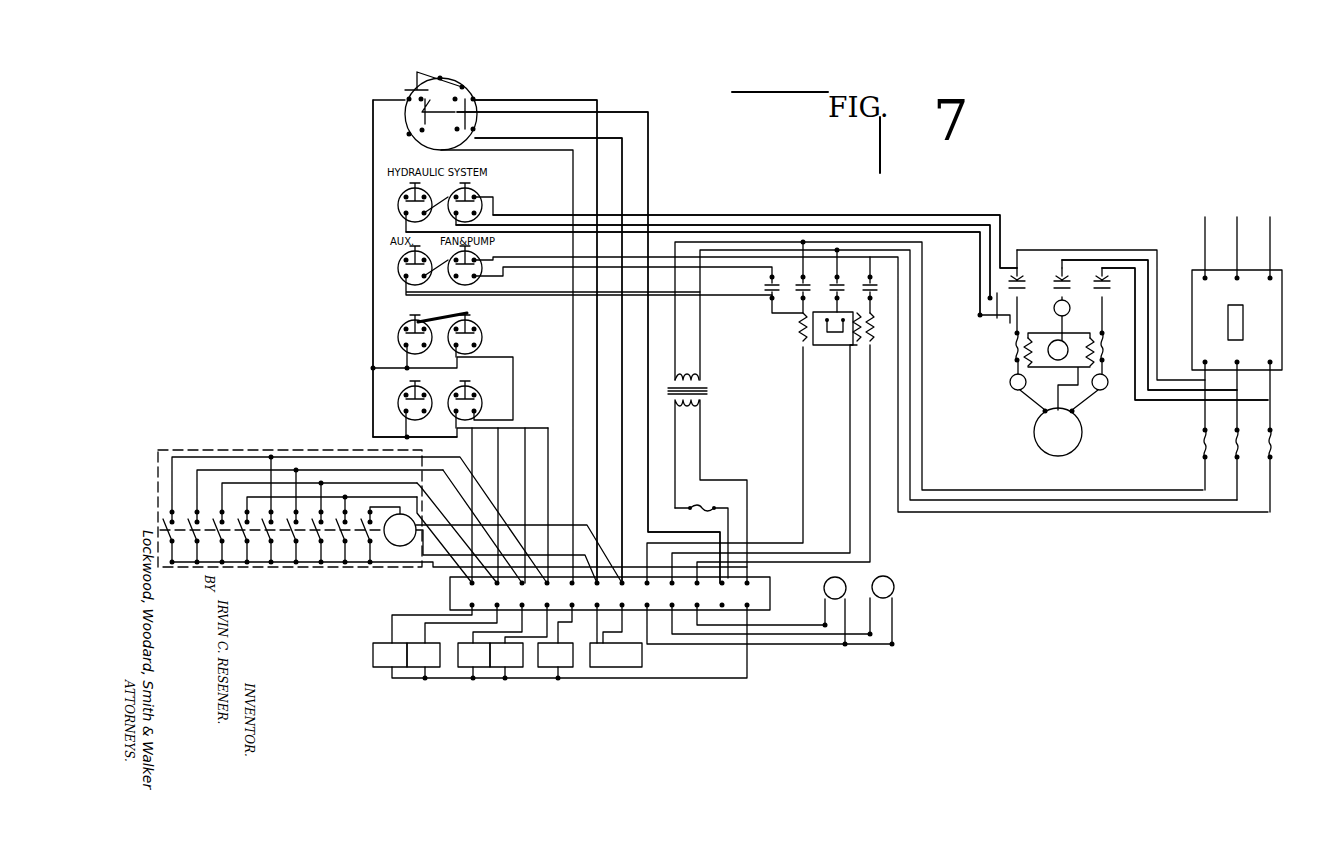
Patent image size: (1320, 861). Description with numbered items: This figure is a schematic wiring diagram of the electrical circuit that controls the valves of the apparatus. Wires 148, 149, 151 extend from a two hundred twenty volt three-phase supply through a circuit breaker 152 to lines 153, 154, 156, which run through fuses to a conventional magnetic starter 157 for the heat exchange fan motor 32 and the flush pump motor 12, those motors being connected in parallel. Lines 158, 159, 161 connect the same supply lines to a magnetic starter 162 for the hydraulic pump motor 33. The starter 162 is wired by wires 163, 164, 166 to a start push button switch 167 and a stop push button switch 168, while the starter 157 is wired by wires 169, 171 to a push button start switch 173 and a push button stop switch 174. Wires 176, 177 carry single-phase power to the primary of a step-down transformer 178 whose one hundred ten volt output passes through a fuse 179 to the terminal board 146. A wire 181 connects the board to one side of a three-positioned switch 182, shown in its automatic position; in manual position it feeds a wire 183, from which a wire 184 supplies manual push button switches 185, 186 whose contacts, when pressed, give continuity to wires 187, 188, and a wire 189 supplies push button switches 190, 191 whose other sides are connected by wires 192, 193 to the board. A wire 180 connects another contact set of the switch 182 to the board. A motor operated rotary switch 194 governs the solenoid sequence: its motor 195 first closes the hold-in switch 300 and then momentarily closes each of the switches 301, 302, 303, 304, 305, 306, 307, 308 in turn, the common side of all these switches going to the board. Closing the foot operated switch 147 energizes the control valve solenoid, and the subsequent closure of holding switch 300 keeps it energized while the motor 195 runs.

The three-positioned switch 182 is at (474, 75).
The wire 183 is at (373, 152).
The wire 181 is at (606, 112).
The wire 180 is at (620, 420).
The start push button switch 167 is at (397, 204).
The stop push button switch 168 is at (480, 196).
The push button start switch 173 is at (397, 268).
The push button stop switch 174 is at (494, 252).
The manual push button switch 185 is at (397, 331).
The manual push button switch 186 is at (478, 331).
The wire 184 is at (370, 368).
The manually operated push button switch 190 is at (397, 402).
The manually operated push button switch 191 is at (471, 392).
The wire 189 is at (380, 437).
The wire 187 is at (472, 470).
The wire 188 is at (498, 476).
The wire 193 is at (524, 486).
The wire 192 is at (548, 482).
The wire 176 is at (676, 360).
The wire 177 is at (698, 350).
The step-down transformer 178 is at (705, 398).
The fuse 179 is at (681, 507).
The magnetic starter 157 is at (805, 340).
The wire 171 is at (710, 268).
The wire 169 is at (738, 260).
The wire 164 is at (945, 216).
The wire 166 is at (990, 224).
The wire 163 is at (935, 236).
The line 158 is at (1145, 302).
The magnetic starter 162 is at (1007, 358).
The hydraulic pump motor 33 is at (1080, 436).
The line 159 is at (1150, 316).
The line 161 is at (1157, 352).
The circuit breaker 152 is at (1190, 278).
The wire 148 is at (1205, 217).
The wire 149 is at (1237, 217).
The wire 151 is at (1270, 217).
The line 153 is at (1204, 421).
The line 154 is at (1238, 430).
The line 156 is at (1271, 420).
The motor operated rotary switch 194 is at (186, 450).
The hold-in switch 300 is at (370, 545).
The switch 301 is at (345, 545).
The switch 302 is at (321, 545).
The switch 303 is at (296, 545).
The switch 304 is at (271, 545).
The switch 305 is at (247, 545).
The switch 306 is at (222, 545).
The switch 307 is at (197, 545).
The switch 308 is at (172, 545).
The motor 195 is at (423, 555).
The terminal board 146 is at (770, 600).
The foot operated switch 147 is at (642, 658).
The heat exchange fan motor 32 is at (822, 586).
The flush pump motor 12 is at (893, 582).